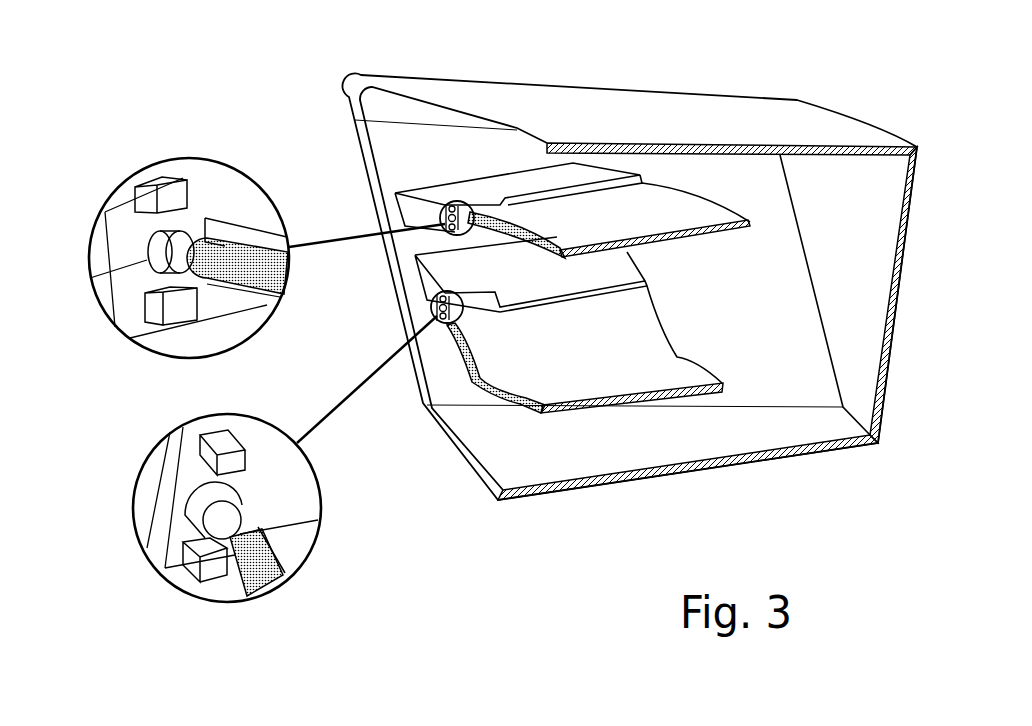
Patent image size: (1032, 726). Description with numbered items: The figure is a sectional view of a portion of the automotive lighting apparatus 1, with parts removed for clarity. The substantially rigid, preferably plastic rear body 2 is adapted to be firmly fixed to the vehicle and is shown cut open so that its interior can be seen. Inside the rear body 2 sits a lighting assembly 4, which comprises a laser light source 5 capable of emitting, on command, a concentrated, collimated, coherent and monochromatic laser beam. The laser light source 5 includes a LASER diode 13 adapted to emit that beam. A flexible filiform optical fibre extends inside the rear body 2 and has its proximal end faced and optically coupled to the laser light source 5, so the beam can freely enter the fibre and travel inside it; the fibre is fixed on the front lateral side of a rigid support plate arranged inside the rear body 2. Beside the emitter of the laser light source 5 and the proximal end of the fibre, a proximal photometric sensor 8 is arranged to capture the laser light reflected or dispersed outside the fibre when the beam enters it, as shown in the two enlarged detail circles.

The lighting apparatus 1 is at (318, 122).
The rear body 2 is at (782, 122).
The lighting assembly 4 is at (490, 231).
The laser light source 5 is at (190, 234).
The proximal photometric sensor 8 is at (143, 198).
The LASER diode 13 is at (150, 258).